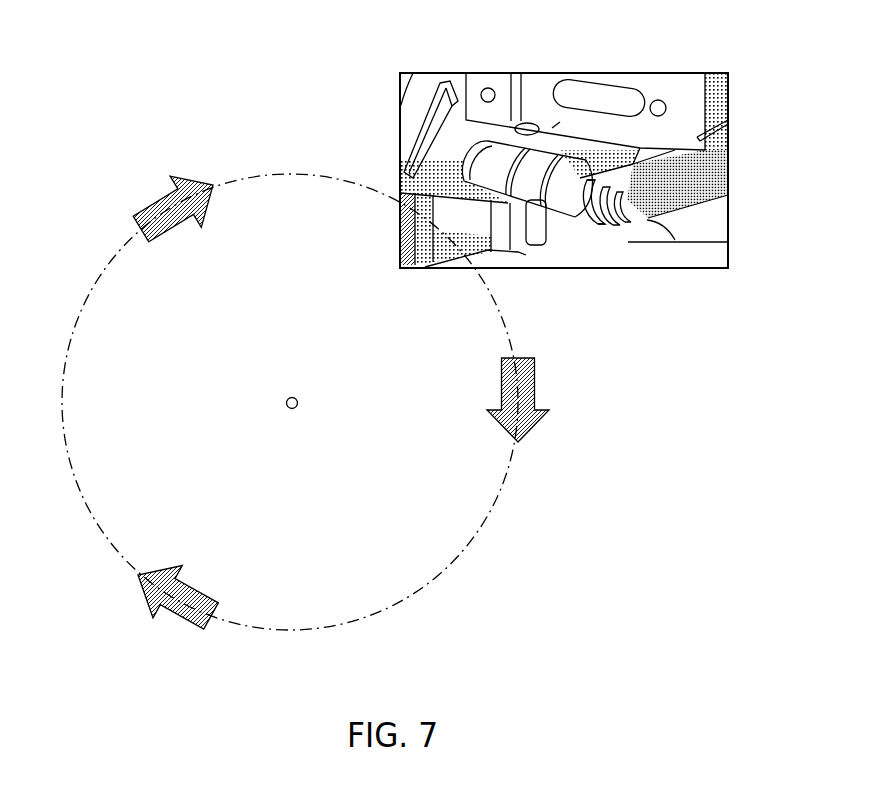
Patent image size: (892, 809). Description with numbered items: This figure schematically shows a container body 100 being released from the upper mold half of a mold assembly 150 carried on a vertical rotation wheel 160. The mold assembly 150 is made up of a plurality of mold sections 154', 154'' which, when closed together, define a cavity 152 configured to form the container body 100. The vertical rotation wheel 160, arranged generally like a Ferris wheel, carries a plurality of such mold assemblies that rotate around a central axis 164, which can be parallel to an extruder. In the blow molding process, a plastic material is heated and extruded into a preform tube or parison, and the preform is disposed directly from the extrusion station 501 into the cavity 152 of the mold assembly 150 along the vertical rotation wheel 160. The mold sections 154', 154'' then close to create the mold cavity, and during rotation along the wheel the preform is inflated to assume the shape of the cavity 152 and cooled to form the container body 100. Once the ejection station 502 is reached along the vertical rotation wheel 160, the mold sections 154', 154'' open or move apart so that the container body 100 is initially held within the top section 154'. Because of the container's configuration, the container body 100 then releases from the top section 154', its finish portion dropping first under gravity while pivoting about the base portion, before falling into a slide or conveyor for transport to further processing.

The container body 100 is at (565, 196).
The mold assembly 150 is at (731, 102).
The cavity 152 is at (600, 171).
The top section 154' is at (520, 76).
The mold section 154'' is at (483, 271).
The vertical rotation wheel 160 is at (160, 138).
The central axis 164 is at (297, 398).
The extrusion station 501 is at (448, 571).
The ejection station 502 is at (579, 323).